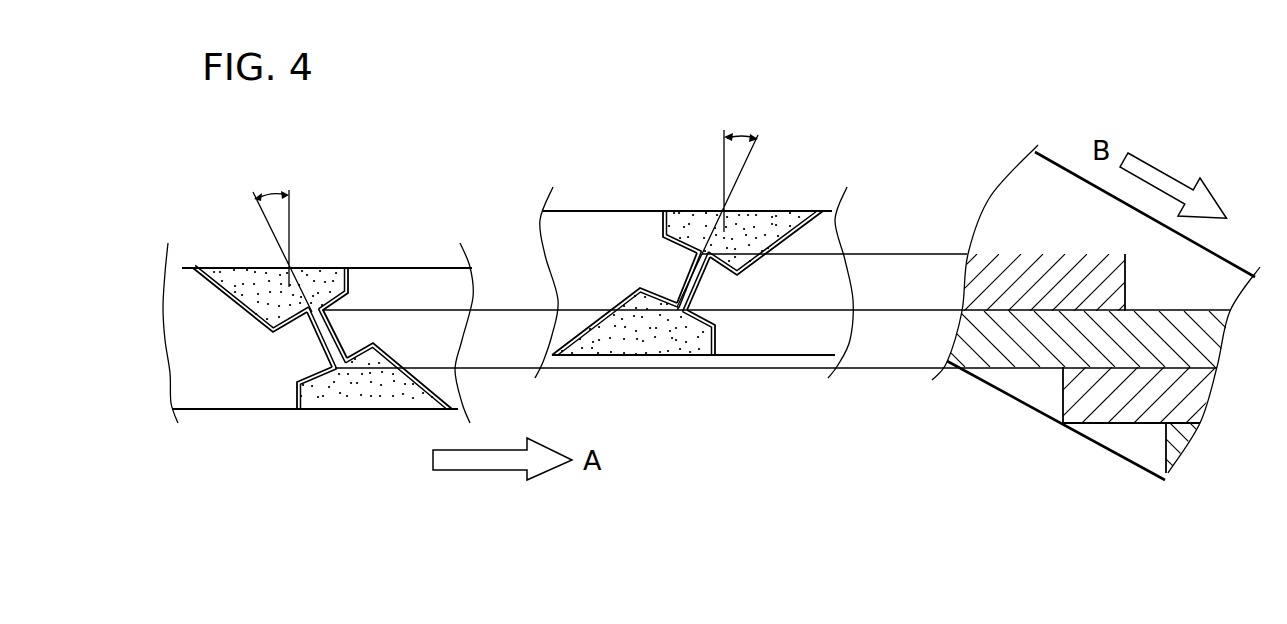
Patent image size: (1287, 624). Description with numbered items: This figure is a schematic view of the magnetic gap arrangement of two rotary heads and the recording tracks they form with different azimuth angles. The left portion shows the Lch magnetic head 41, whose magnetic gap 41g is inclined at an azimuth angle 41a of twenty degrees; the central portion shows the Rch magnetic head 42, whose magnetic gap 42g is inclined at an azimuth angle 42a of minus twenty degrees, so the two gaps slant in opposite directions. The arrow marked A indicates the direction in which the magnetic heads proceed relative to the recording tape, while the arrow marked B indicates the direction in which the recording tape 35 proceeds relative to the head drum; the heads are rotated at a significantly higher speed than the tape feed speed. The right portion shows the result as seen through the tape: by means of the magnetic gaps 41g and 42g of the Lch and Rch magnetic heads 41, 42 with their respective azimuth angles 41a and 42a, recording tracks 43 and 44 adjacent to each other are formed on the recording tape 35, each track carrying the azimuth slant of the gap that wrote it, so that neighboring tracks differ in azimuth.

The Lch magnetic head 41 is at (387, 258).
The azimuth angle 41a is at (278, 233).
The magnetic gap 41g is at (313, 340).
The Rch magnetic head 42 is at (794, 200).
The azimuth angle 42a is at (720, 202).
The magnetic gap 42g is at (687, 277).
The recording track 43 is at (1013, 348).
The recording track 44 is at (1008, 257).
The recording tape 35 is at (1123, 438).